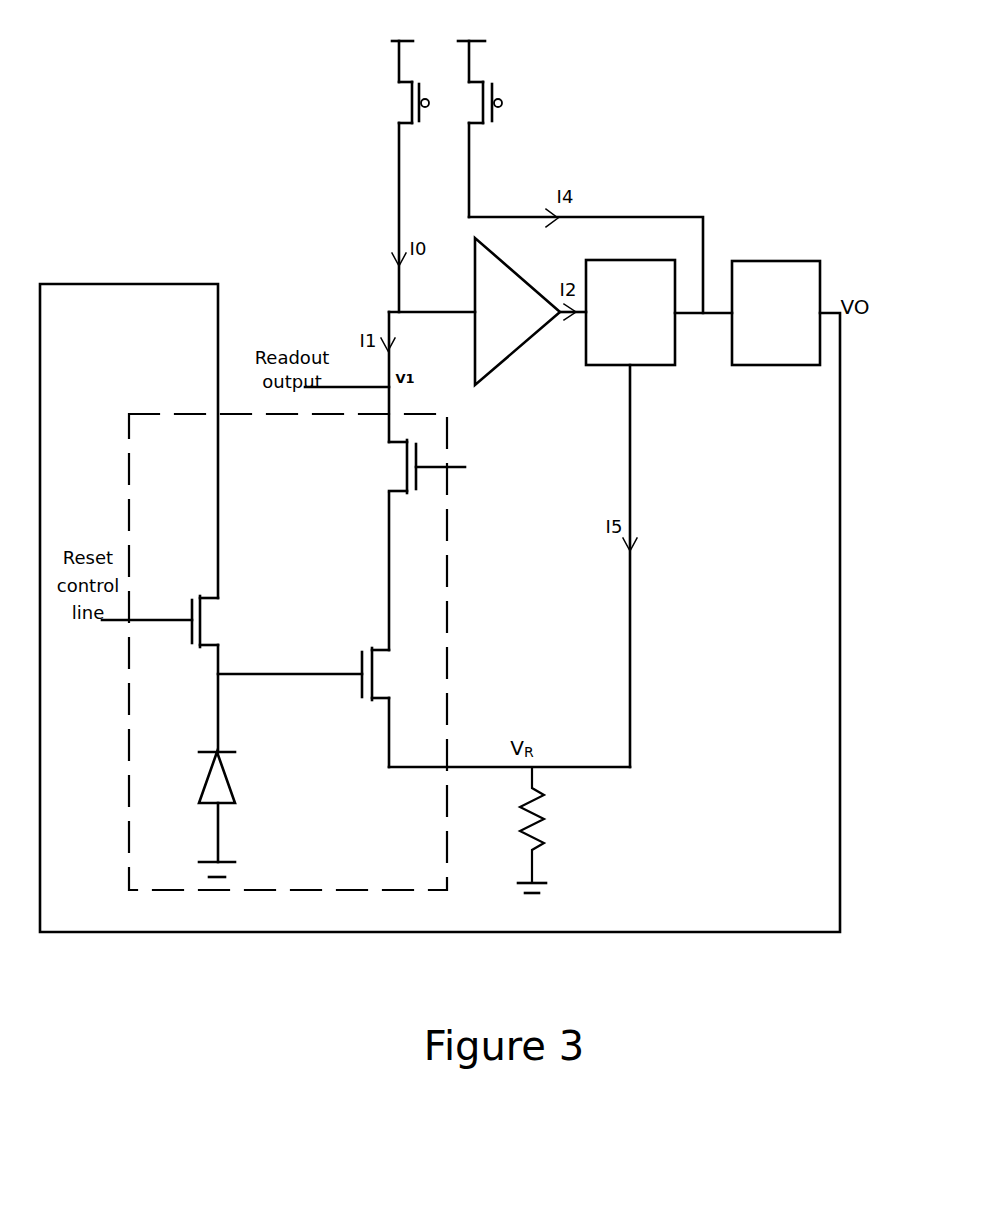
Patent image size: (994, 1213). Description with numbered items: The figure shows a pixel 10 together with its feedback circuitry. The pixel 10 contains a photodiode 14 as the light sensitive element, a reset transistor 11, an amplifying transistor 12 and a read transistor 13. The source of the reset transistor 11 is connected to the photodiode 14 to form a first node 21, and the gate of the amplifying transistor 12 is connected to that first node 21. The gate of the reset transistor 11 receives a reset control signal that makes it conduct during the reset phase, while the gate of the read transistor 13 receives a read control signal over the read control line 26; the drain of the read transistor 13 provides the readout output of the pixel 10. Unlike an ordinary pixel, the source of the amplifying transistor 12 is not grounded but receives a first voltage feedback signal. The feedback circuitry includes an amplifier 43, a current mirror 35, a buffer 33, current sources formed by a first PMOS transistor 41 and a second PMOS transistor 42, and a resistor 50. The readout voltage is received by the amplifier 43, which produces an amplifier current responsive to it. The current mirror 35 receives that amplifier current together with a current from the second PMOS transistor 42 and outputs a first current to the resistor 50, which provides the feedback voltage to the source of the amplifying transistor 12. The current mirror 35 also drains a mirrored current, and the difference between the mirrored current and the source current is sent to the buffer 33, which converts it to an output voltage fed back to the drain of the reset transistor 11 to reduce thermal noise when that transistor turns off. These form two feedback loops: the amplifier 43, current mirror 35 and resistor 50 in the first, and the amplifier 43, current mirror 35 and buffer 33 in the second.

The pixel 10 is at (347, 846).
The reset transistor M1 11 is at (168, 621).
The amplifying transistor M2 12 is at (384, 630).
The read transistor M3 13 is at (389, 402).
The photodiode D1 14 is at (256, 814).
The first node 21 is at (212, 674).
The read control line 26 is at (463, 525).
The buffer 33 is at (776, 313).
The current mirror 35 is at (630, 312).
The PMOS transistor M4 41 is at (385, 176).
The PMOS transistor M5 42 is at (501, 129).
The amplifier 43 is at (517, 311).
The resistor Rm 50 is at (553, 830).